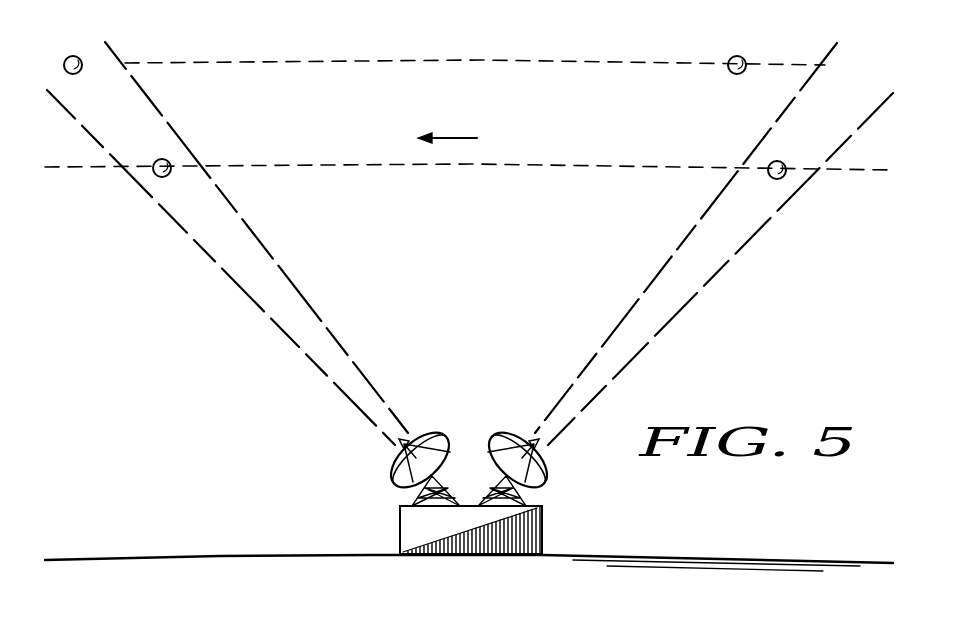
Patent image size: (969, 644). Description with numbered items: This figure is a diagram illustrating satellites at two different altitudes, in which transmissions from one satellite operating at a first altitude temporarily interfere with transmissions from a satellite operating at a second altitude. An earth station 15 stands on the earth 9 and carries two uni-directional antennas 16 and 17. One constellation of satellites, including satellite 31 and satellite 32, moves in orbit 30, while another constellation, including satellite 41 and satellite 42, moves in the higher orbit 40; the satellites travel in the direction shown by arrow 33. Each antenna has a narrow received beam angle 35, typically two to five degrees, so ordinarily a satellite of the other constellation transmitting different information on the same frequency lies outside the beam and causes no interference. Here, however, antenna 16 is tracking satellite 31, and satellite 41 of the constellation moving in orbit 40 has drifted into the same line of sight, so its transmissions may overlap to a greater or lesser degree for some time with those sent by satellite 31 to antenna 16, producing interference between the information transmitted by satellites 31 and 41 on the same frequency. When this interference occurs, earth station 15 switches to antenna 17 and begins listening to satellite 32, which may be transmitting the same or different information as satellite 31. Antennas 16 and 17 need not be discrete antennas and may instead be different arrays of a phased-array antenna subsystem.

The earth 9 is at (222, 555).
The earth station 15 is at (542, 528).
The antenna 16 is at (422, 431).
The antenna 17 is at (515, 433).
The orbit 30 is at (551, 162).
The satellite 31 is at (157, 161).
The satellite 32 is at (780, 161).
The arrow 33 is at (445, 137).
The received beam angle 35 is at (689, 196).
The orbit 40 is at (552, 58).
The satellite 41 is at (80, 72).
The satellite 42 is at (732, 77).